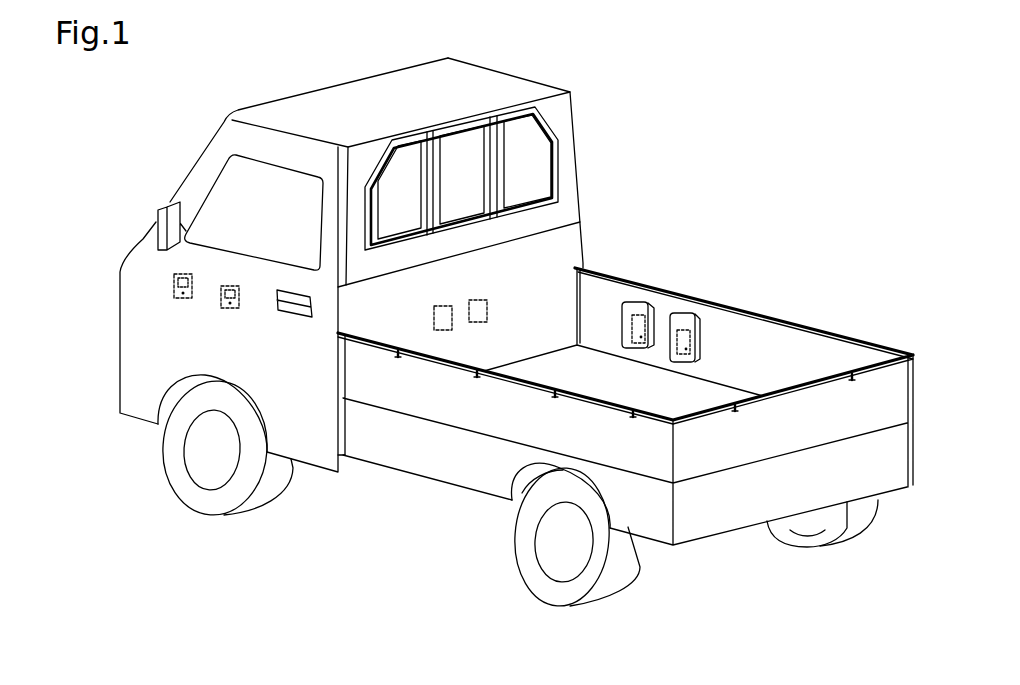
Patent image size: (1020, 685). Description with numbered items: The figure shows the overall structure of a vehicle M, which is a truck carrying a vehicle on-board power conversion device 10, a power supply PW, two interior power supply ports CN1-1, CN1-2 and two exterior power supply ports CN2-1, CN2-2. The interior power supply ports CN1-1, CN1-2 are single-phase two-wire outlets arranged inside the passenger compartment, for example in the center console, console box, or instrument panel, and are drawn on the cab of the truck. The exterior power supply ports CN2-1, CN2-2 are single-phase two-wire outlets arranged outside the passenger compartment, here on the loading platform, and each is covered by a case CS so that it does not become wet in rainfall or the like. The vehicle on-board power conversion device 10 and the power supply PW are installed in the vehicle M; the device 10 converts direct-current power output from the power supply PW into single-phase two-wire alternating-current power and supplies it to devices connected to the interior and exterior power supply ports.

The vehicle M is at (759, 104).
The interior power supply port CN1-1 is at (182, 300).
The interior power supply port CN1-2 is at (231, 284).
The power supply PW is at (438, 305).
The vehicle on-board power conversion device 10 is at (494, 303).
The exterior power supply port CN2-1 is at (640, 305).
The exterior power supply port CN2-2 is at (688, 322).
The case CS is at (622, 334).